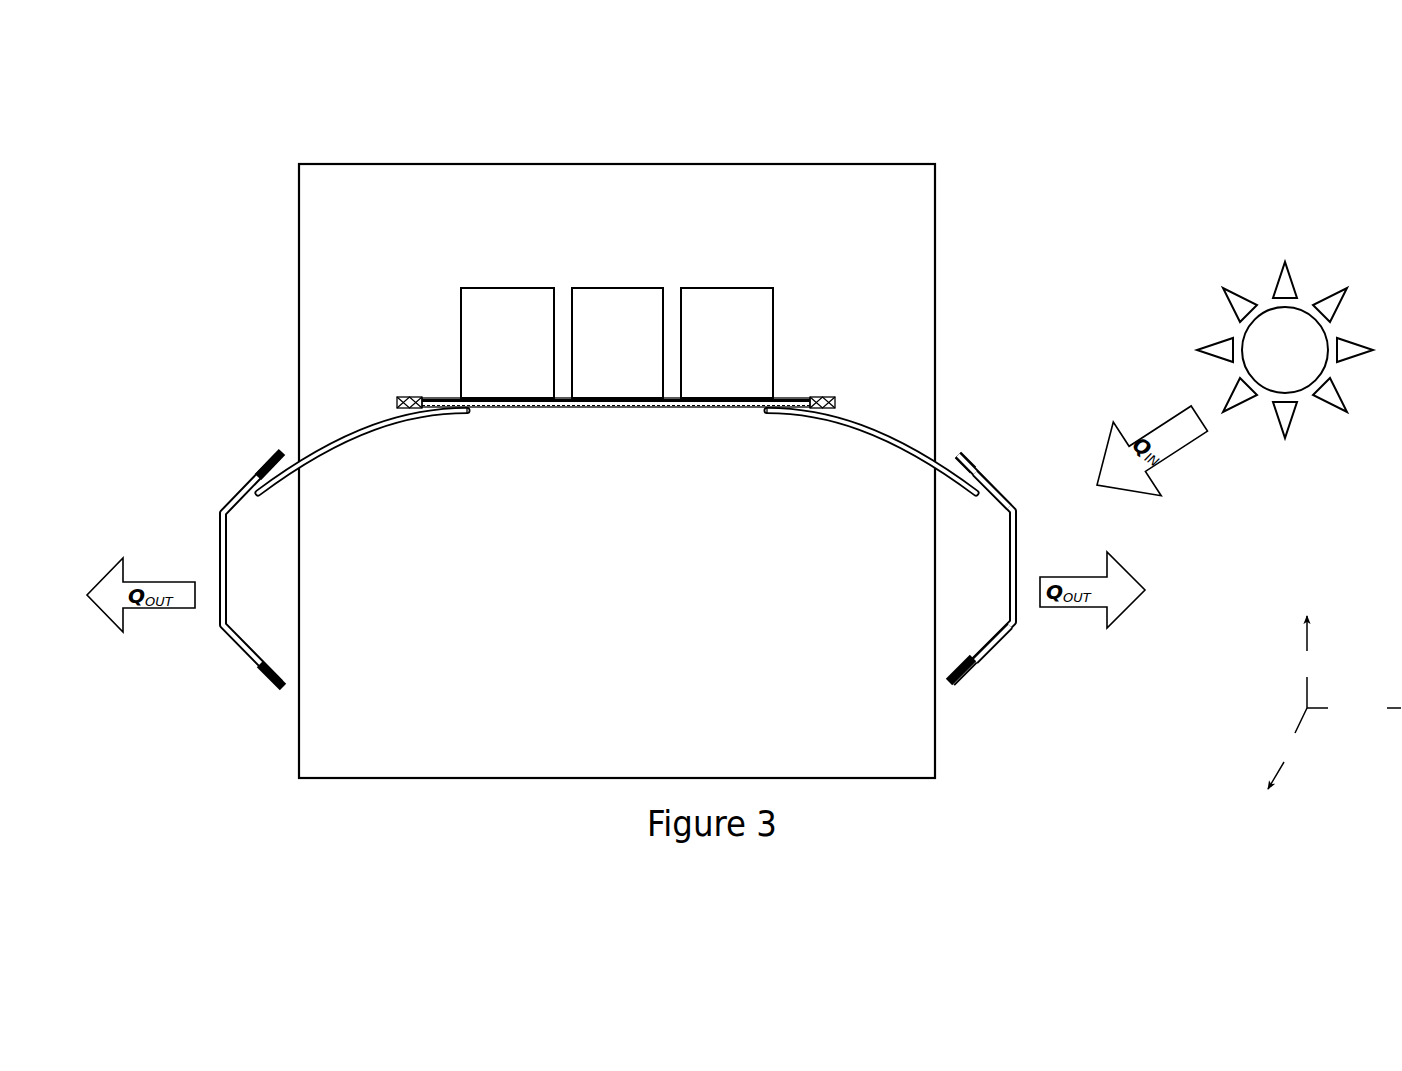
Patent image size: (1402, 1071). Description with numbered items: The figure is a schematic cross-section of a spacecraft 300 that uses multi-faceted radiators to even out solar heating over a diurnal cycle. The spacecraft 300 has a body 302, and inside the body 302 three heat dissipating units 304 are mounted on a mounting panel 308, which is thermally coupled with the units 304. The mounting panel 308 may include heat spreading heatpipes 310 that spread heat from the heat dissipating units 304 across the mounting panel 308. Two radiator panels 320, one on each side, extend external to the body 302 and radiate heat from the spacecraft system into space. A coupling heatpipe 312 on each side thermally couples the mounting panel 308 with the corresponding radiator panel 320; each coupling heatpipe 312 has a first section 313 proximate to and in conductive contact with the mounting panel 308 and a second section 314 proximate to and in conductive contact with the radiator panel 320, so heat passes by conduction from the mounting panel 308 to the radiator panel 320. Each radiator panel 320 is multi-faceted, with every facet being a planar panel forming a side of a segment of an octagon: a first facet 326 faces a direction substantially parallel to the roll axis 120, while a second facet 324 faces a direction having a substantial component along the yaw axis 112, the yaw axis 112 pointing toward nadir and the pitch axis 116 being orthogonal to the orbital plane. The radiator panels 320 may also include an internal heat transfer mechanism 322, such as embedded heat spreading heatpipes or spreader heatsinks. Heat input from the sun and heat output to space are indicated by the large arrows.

The spacecraft 300 is at (148, 131).
The body 302 is at (883, 165).
The heat dissipating units 304 is at (512, 287).
The mounting panel 308 is at (837, 398).
The heat spreading heatpipes 310 is at (425, 398).
The coupling heatpipe 312 is at (307, 443).
The first section 313 is at (796, 429).
The second section 314 is at (948, 489).
The radiator panel 320 is at (232, 497).
The internal heat transfer mechanism 322 is at (983, 650).
The second facet 324 is at (997, 467).
The first facet 326 is at (1021, 549).
The yaw axis 112 is at (1309, 662).
The pitch axis 116 is at (1289, 748).
The roll axis 120 is at (1354, 708).